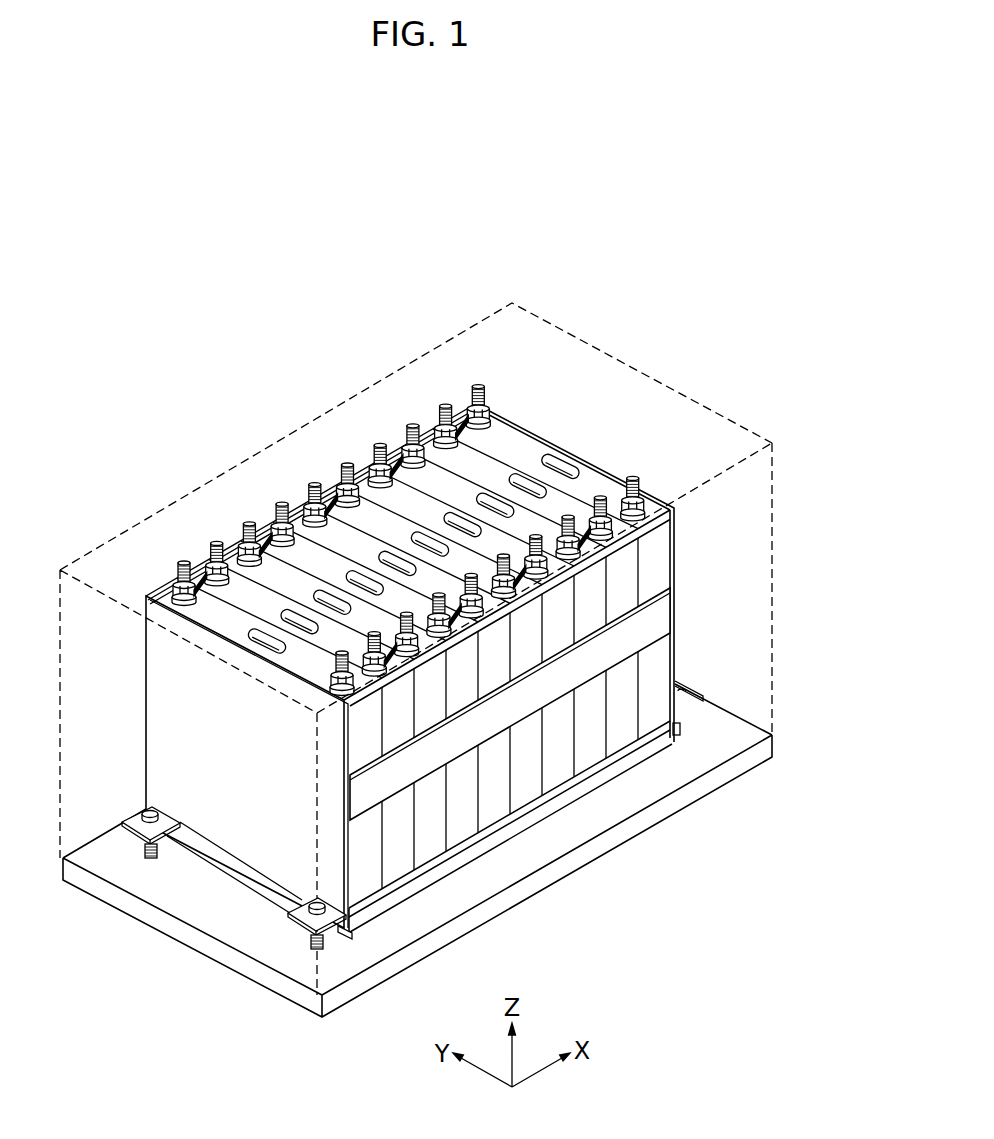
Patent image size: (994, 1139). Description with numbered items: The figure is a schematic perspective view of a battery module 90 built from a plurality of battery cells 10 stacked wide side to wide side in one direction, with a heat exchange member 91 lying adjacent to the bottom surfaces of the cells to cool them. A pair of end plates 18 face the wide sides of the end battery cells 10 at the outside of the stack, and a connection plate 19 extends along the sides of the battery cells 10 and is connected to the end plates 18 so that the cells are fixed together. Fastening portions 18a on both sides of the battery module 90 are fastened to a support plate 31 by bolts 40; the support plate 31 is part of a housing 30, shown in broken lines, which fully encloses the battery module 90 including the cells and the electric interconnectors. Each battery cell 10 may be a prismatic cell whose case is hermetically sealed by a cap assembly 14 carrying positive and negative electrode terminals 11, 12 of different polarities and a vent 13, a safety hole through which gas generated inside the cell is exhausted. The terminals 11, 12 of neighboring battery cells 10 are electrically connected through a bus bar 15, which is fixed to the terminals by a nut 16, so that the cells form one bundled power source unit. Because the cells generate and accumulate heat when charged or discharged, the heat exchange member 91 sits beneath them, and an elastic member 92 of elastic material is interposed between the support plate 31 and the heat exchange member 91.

The battery cell 10 is at (597, 727).
The positive electrode terminal 11 is at (476, 387).
The negative electrode terminal 12 is at (634, 479).
The vent 13 is at (547, 460).
The cap assembly 14 is at (587, 483).
The bus bar 15 is at (198, 582).
The nut 16 is at (173, 590).
The end plate 18 is at (678, 657).
The fastening portion 18a is at (142, 806).
The connection plate 19 is at (656, 618).
The housing 30 is at (430, 352).
The support plate 31 is at (618, 830).
The bolt 40 is at (150, 835).
The battery module 90 is at (409, 667).
The heat exchange member 91 is at (498, 833).
The elastic member 92 is at (552, 813).